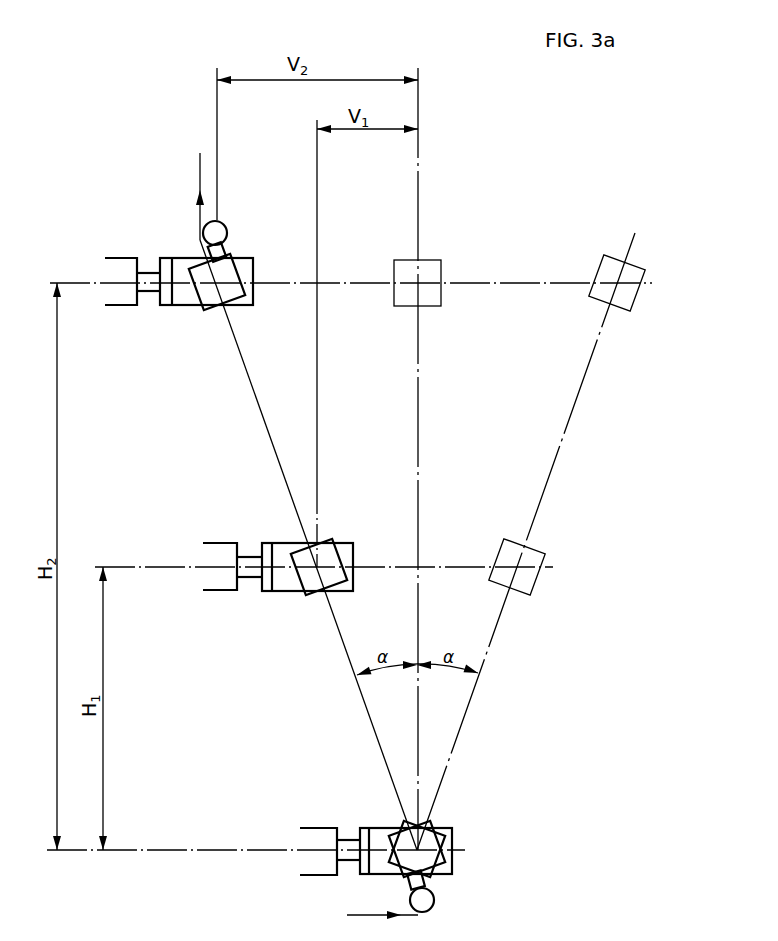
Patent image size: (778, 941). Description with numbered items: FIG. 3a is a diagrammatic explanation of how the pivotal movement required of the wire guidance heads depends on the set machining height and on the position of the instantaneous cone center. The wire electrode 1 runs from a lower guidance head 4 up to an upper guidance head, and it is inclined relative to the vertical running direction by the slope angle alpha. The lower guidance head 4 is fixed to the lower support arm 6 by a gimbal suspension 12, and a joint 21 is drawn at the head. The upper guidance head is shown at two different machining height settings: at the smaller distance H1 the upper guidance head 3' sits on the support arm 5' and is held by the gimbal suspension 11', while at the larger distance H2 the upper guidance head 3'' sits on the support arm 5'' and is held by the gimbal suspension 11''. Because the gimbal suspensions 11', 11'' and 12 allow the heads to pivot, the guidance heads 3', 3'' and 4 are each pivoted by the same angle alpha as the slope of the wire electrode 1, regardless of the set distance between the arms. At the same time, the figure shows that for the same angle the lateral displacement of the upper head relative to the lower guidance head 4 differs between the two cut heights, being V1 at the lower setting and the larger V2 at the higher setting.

The wire electrode 1 is at (198, 163).
The swivel joint 21 is at (216, 226).
The upper support arm 5'' is at (115, 264).
The gimbal suspension 11'' is at (201, 302).
The upper guidance head 3'' is at (228, 268).
The upper support arm 5' is at (215, 551).
The gimbal suspension 11' is at (302, 587).
The upper guidance head 3' is at (331, 554).
The lower support arm 6 is at (320, 838).
The gimbal suspension 12 is at (381, 838).
The lower guidance head 4 is at (448, 830).